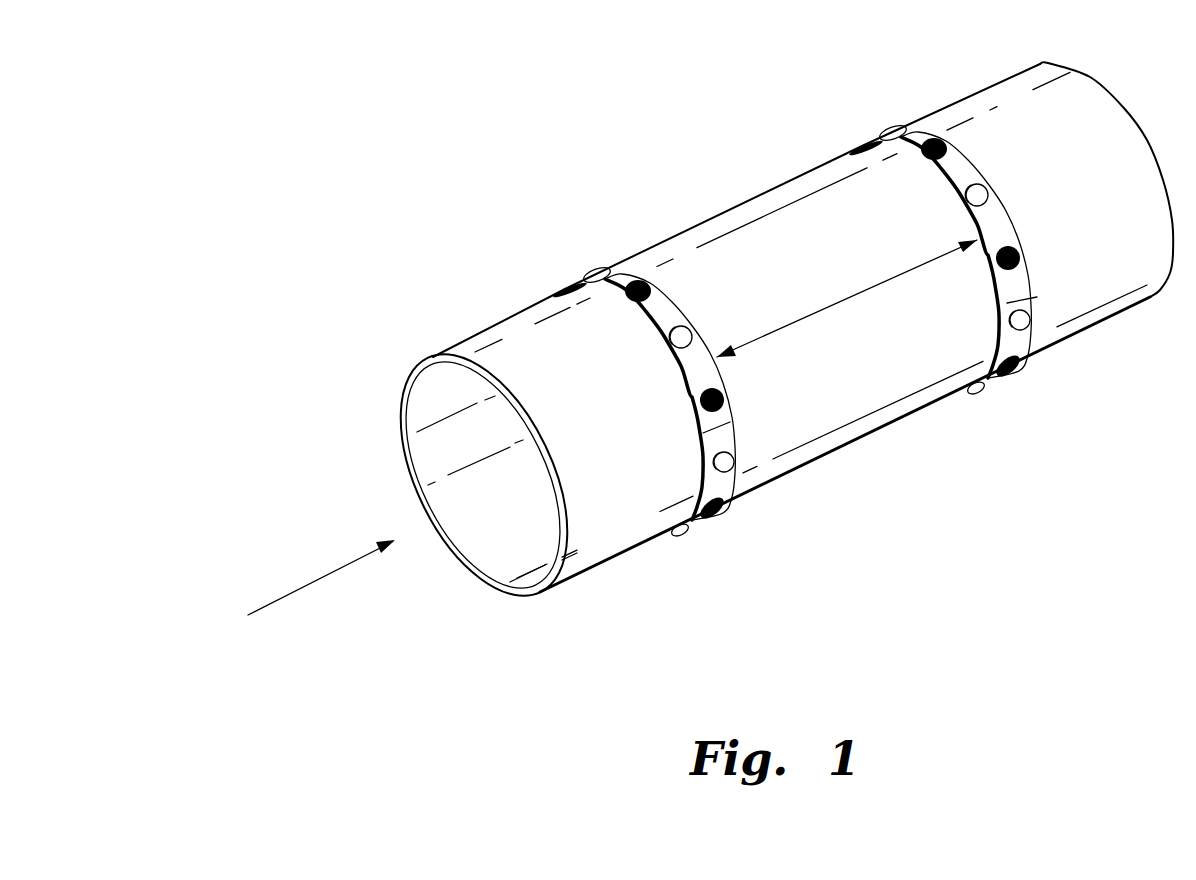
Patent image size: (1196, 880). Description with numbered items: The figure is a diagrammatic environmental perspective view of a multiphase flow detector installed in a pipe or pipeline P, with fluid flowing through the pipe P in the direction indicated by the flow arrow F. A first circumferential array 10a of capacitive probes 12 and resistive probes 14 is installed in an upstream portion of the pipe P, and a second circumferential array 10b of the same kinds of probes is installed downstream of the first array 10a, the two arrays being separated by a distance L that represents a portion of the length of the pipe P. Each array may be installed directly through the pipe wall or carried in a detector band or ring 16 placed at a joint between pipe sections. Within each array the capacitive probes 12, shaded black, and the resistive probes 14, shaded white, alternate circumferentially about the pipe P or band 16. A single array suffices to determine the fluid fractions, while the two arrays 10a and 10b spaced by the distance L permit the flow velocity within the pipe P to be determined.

The first circumferential array 10a is at (585, 265).
The second circumferential array 10b is at (873, 123).
The capacitive probe 12 is at (553, 290).
The resistive probe 14 is at (600, 268).
The detector band 16 is at (660, 318).
The pipe P is at (785, 184).
The distance L is at (837, 300).
The flow arrow F is at (321, 575).